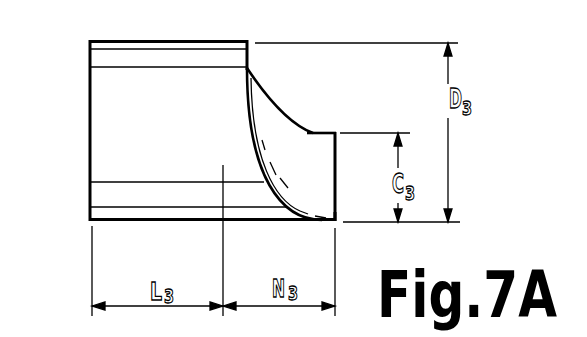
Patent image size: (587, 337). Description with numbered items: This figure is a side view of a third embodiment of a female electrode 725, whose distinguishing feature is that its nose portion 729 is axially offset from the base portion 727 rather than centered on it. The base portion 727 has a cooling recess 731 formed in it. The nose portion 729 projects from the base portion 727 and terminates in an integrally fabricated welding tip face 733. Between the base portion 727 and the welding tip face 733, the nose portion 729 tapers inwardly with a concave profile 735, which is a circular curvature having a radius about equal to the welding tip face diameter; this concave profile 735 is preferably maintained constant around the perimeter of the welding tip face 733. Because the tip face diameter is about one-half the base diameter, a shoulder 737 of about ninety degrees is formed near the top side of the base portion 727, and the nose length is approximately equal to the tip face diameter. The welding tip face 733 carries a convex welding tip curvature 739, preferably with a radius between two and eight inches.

The electrode 725 is at (179, 222).
The base portion 727 is at (176, 25).
The nose portion 729 is at (305, 138).
The cooling recess 731 is at (89, 169).
The welding tip face 733 is at (343, 213).
The concave profile 735 is at (284, 108).
The shoulder 737 is at (248, 45).
The convex welding tip curvature 739 is at (343, 161).